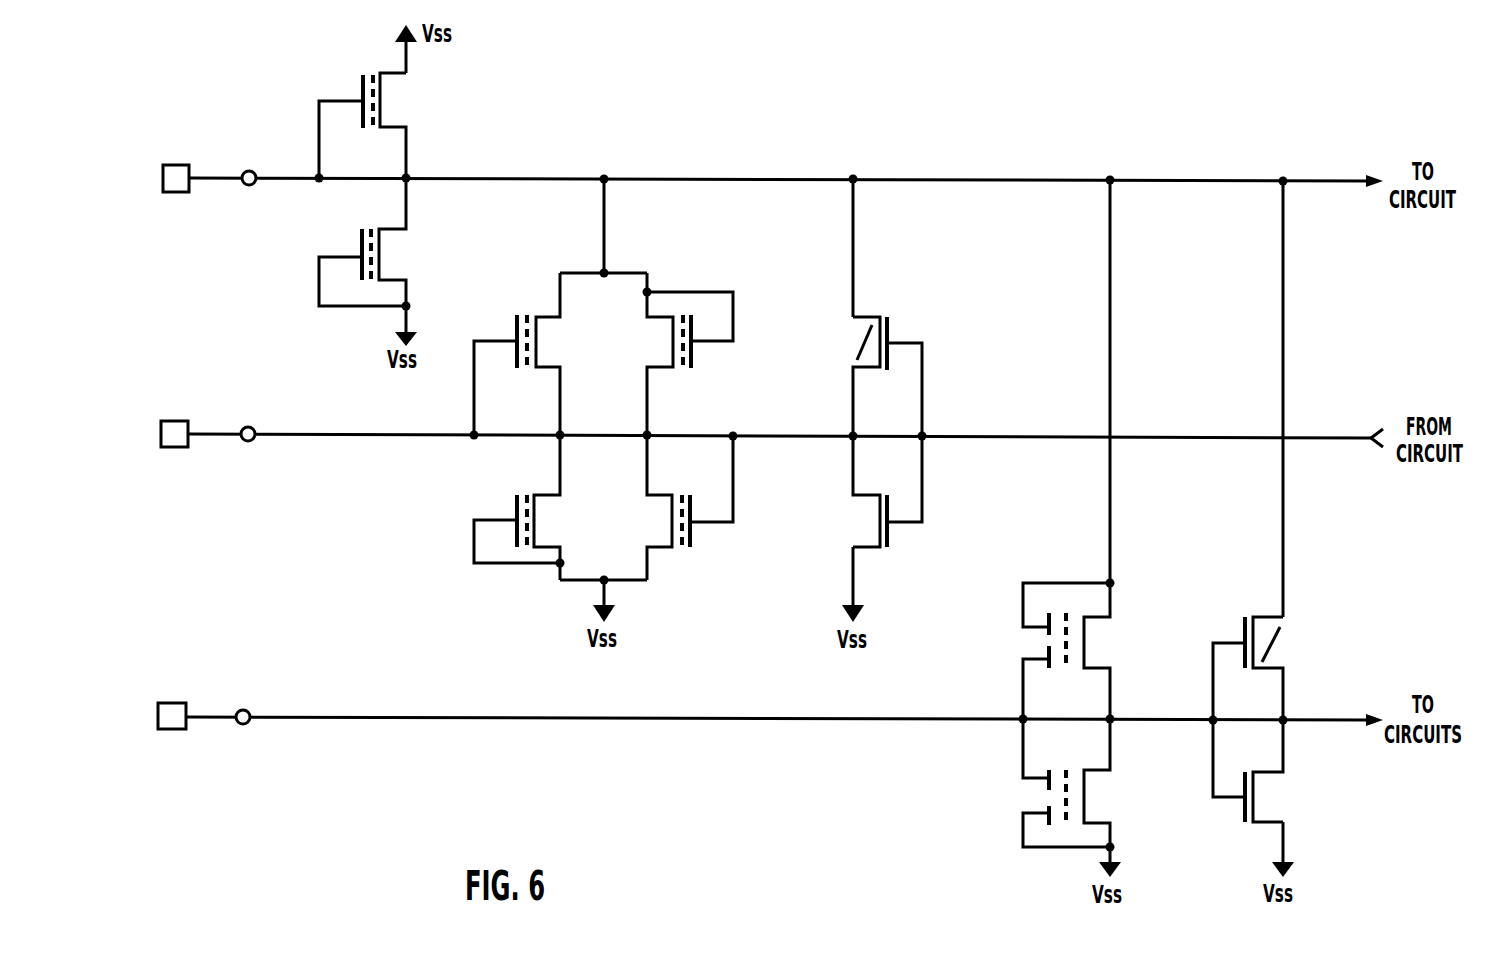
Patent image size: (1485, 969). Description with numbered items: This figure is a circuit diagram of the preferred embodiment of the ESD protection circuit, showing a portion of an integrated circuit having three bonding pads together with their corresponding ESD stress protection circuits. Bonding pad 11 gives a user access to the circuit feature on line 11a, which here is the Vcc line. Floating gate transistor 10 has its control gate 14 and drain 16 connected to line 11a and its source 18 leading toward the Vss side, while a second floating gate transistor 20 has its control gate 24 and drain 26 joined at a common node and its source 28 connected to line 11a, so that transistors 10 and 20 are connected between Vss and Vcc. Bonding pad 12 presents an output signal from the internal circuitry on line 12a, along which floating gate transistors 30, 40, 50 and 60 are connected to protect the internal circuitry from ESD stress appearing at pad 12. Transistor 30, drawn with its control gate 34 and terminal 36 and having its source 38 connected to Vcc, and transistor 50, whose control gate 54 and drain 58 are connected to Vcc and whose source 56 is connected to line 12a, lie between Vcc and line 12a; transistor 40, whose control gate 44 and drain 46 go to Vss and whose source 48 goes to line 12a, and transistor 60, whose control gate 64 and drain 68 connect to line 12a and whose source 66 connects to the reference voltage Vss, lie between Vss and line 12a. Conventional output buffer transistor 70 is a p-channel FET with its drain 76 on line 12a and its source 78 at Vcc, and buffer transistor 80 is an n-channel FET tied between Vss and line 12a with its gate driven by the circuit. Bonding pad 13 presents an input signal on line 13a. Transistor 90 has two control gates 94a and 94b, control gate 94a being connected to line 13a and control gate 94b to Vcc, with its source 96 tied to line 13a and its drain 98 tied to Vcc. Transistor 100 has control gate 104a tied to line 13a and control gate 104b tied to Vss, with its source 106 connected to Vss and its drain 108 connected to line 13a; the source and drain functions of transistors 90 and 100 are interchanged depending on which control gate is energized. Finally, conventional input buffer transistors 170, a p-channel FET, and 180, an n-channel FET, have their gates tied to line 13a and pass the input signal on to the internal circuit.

The floating gate transistor 10 is at (376, 115).
The bonding pad 11 is at (174, 167).
The line 11a is at (248, 170).
The bonding pad 12 is at (173, 423).
The line 12a is at (247, 426).
The bonding pad 13 is at (168, 704).
The line 13a is at (240, 709).
The control gate 14 is at (351, 90).
The drain 16 is at (362, 161).
The source 18 is at (406, 81).
The floating gate transistor 20 is at (376, 242).
The control gate 24 is at (348, 250).
The drain 26 is at (406, 280).
The source 28 is at (406, 216).
The floating gate transistor 30 is at (529, 354).
The gate of transistor 30 34 is at (505, 330).
The source of transistor 30 36 is at (560, 388).
The source 38 is at (560, 307).
The floating gate transistor 40 is at (529, 507).
The control gate 44 is at (503, 517).
The drain 46 is at (559, 550).
The source 48 is at (559, 478).
The floating gate transistor 50 is at (677, 354).
The control gate 54 is at (703, 334).
The source 56 is at (691, 417).
The drain 58 is at (647, 307).
The floating gate transistor 60 is at (677, 507).
The control gate 64 is at (702, 514).
The source 66 is at (647, 550).
The drain 68 is at (647, 478).
The buffer transistor 70 is at (873, 369).
The drain 76 is at (885, 399).
The source 78 is at (852, 322).
The buffer transistor 80 is at (885, 482).
The transistor 90 is at (1061, 651).
The control gate 94a is at (1017, 659).
The control gate 94b is at (1017, 620).
The source 96 is at (1110, 680).
The drain 98 is at (1110, 612).
The transistor 100 is at (1062, 783).
The control gate 104a is at (1013, 777).
The control gate 104b is at (1013, 815).
The source 106 is at (1115, 821).
The drain 108 is at (1115, 757).
The buffer transistor 170 is at (1263, 706).
The buffer transistor 180 is at (1263, 754).